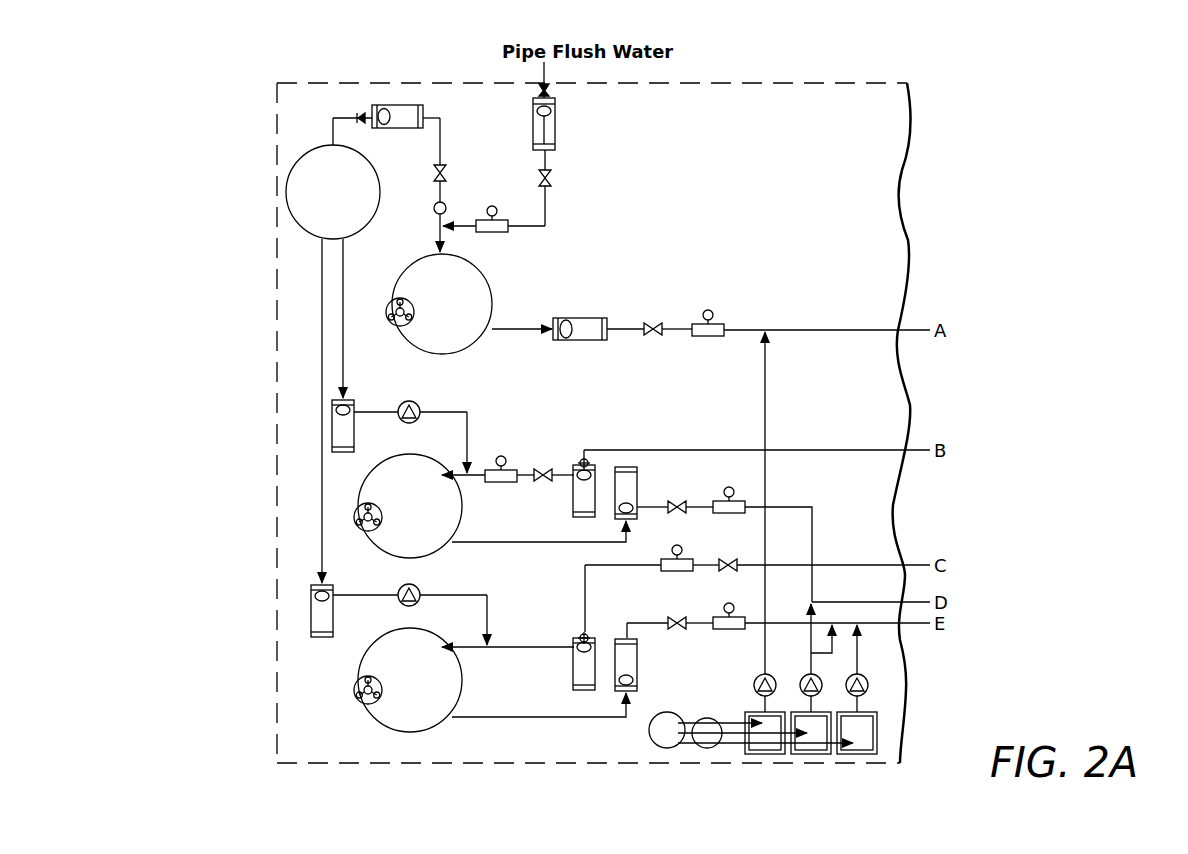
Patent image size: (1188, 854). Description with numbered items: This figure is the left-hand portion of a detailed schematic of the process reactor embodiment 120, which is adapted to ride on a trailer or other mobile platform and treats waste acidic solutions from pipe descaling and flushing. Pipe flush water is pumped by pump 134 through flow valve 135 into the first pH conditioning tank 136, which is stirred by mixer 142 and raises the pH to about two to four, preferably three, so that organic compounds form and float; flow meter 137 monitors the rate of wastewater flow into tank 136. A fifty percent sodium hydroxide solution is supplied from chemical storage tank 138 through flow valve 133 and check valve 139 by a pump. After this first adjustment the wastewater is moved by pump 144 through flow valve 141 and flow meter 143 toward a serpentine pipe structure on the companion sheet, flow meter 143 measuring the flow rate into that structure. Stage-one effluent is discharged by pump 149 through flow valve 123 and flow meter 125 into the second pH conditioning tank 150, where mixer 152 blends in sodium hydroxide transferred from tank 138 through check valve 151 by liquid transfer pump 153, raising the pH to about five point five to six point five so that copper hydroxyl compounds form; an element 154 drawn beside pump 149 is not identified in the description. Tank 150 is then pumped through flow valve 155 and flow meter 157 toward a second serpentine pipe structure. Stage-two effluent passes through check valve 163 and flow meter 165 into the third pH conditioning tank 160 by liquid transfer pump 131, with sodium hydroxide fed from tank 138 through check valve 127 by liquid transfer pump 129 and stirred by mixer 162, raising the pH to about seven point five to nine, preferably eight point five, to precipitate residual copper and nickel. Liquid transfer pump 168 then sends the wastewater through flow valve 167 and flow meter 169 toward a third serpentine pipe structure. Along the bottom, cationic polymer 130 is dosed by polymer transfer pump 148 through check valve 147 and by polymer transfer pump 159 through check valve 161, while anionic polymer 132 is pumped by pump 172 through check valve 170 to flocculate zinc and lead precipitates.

The process reactor embodiment 120 is at (938, 158).
The flow valve 123 is at (543, 468).
The flow meter 125 is at (499, 468).
The check valve 127 is at (417, 586).
The liquid transfer pump 129 is at (316, 612).
The cationic polymer 130 is at (662, 747).
The liquid transfer pump 131 is at (578, 672).
The anionic polymer 132 is at (706, 747).
The flow valve 133 is at (447, 176).
The pump 134 is at (555, 118).
The flow valve 135 is at (551, 178).
The pH conditioning tank 136 is at (485, 280).
The flow meter 137 is at (498, 231).
The chemical storage tank 138 is at (297, 190).
The check valve 139 is at (434, 208).
The flow valve 141 is at (655, 322).
The mixer 142 is at (392, 320).
The flow meter 143 is at (716, 324).
The pump 144 is at (591, 318).
The check valve 147 is at (754, 684).
The polymer transfer pump 148 is at (760, 752).
The pump 149 is at (596, 478).
The second pH conditioning tank 150 is at (455, 511).
The check valve 151 is at (398, 104).
The mixer 152 is at (353, 526).
The liquid transfer pump 153 is at (338, 430).
The column 154 is at (640, 480).
The flow valve 155 is at (678, 500).
The flow meter 157 is at (739, 502).
The polymer transfer pump 159 is at (812, 752).
The third pH conditioning tank 160 is at (458, 704).
The check valve 161 is at (802, 678).
The mixer 162 is at (353, 699).
The check valve 163 is at (730, 558).
The flow meter 165 is at (665, 559).
The flow valve 167 is at (678, 616).
The liquid transfer pump 168 is at (634, 660).
The flow meter 169 is at (740, 617).
The check valve 170 is at (868, 684).
The pump 172 is at (862, 752).